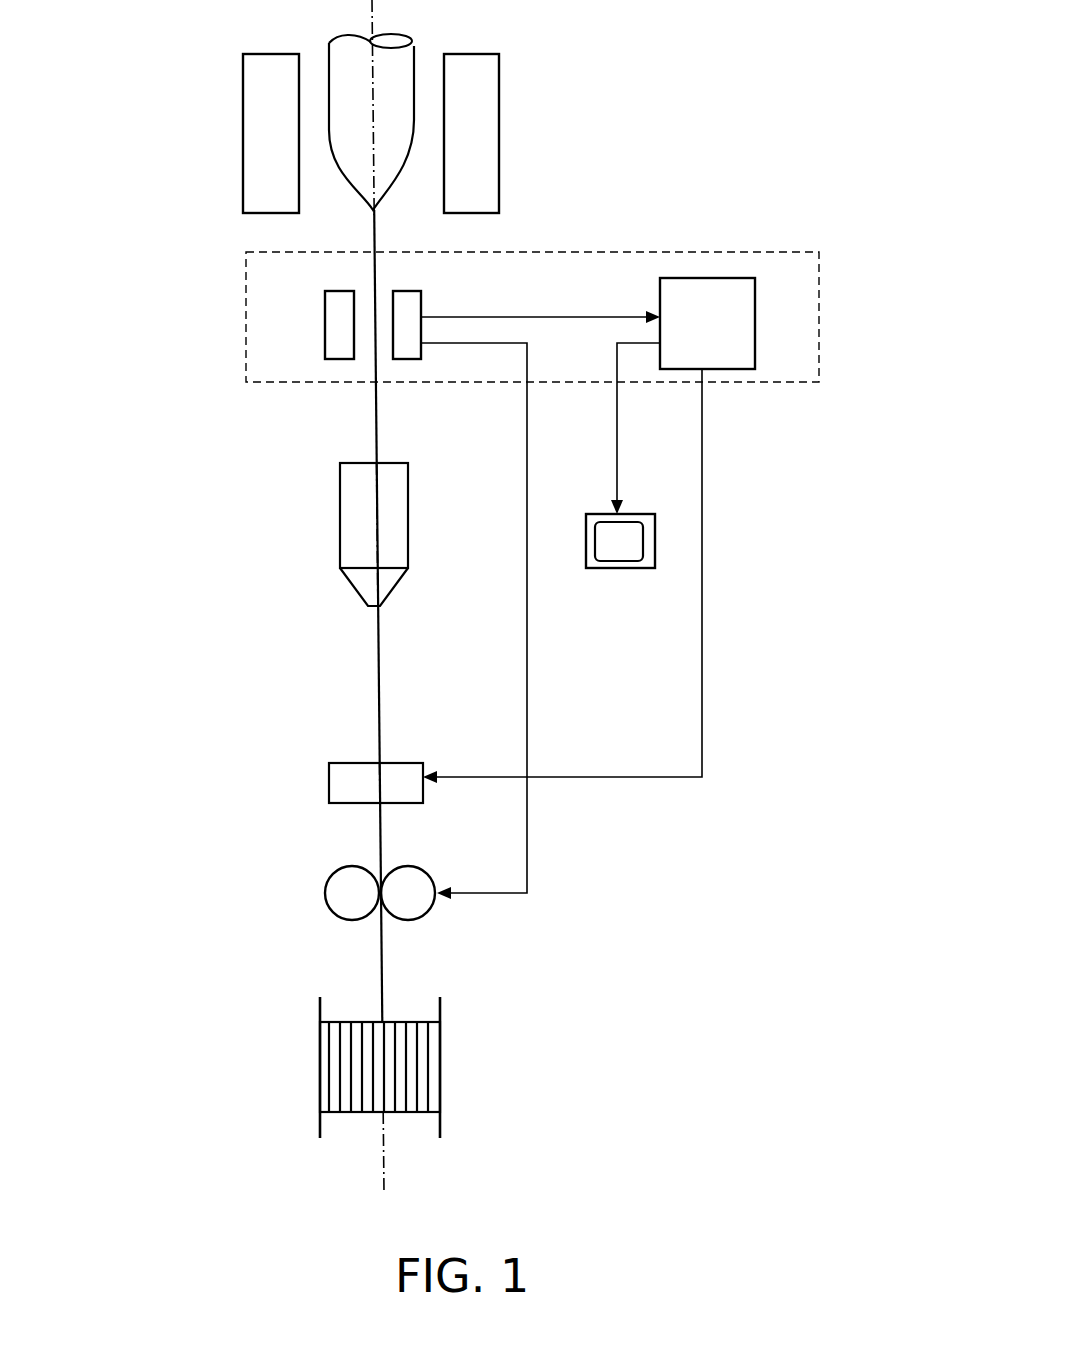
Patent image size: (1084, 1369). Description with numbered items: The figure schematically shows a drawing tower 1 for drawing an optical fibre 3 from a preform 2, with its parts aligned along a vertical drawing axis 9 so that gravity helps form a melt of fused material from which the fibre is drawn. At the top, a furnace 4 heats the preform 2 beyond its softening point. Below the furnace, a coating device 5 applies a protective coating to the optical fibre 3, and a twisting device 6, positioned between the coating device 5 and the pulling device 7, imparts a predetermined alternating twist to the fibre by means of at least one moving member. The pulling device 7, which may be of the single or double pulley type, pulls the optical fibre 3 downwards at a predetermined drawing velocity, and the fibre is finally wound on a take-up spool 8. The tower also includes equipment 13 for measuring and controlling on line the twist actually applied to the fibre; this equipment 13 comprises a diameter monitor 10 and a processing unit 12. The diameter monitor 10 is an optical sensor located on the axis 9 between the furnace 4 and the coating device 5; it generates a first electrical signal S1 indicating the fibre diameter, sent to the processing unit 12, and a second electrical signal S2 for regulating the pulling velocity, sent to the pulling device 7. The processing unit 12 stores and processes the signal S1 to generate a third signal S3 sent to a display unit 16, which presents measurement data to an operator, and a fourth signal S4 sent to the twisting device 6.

The drawing tower 1 is at (643, 52).
The preform 2 is at (400, 63).
The optical fibre 3 is at (376, 683).
The furnace 4 is at (485, 120).
The coating device 5 is at (352, 490).
The twisting device 6 is at (343, 776).
The pulling device 7 is at (345, 906).
The take-up spool 8 is at (425, 1073).
The drawing axis 9 is at (383, 1145).
The diameter monitor 10 is at (330, 323).
The processing unit 12 is at (742, 291).
The equipment 13 is at (659, 251).
The display unit 16 is at (613, 570).
The first electrical signal S1 is at (540, 305).
The second electrical signal S2 is at (474, 621).
The third signal S3 is at (637, 428).
The fourth signal S4 is at (562, 576).